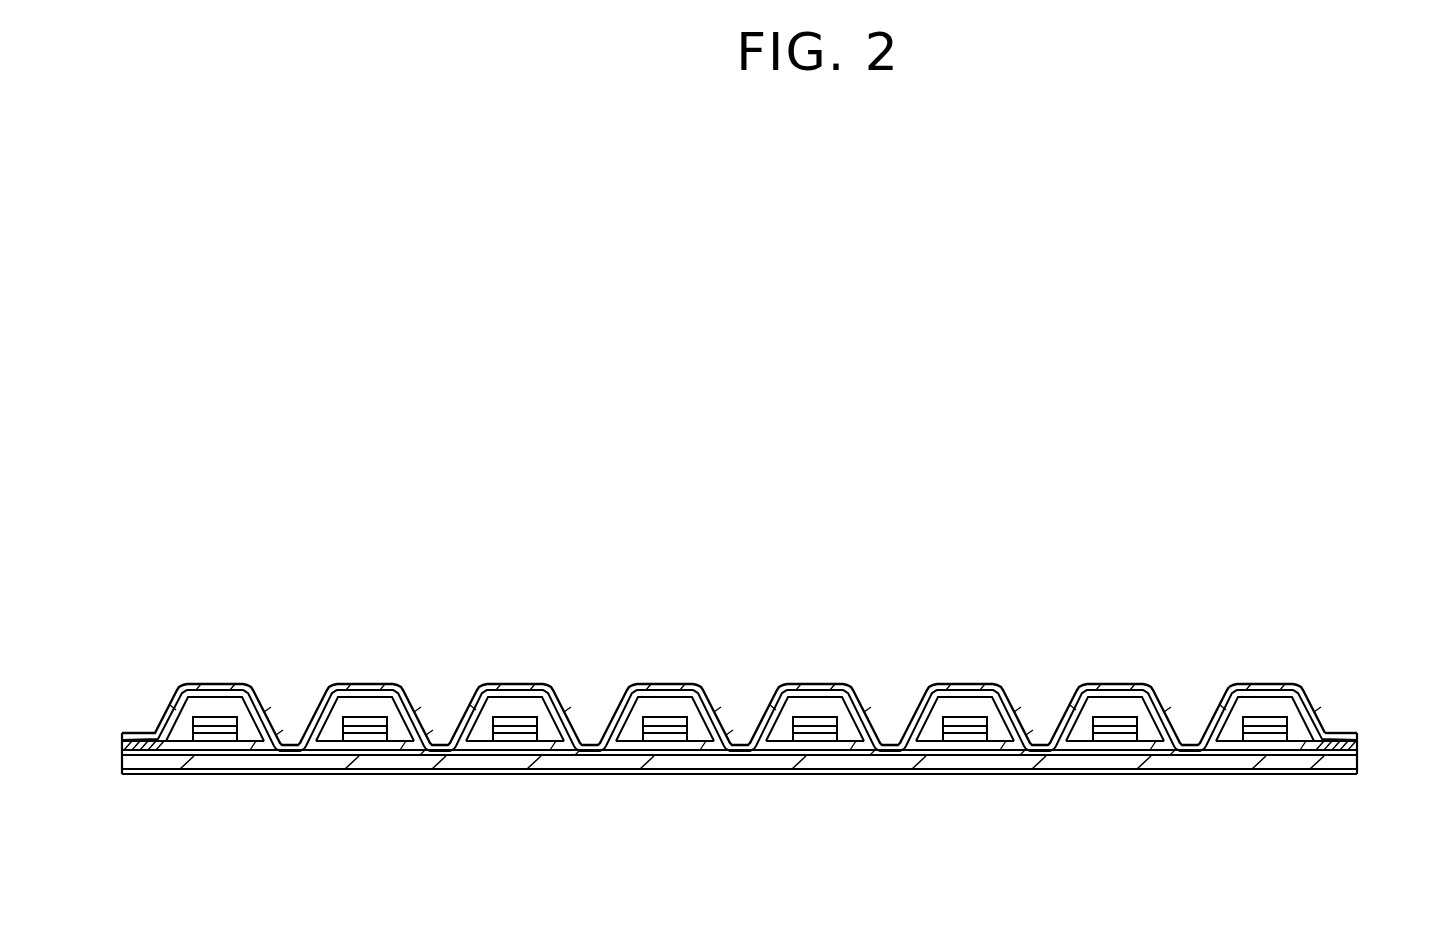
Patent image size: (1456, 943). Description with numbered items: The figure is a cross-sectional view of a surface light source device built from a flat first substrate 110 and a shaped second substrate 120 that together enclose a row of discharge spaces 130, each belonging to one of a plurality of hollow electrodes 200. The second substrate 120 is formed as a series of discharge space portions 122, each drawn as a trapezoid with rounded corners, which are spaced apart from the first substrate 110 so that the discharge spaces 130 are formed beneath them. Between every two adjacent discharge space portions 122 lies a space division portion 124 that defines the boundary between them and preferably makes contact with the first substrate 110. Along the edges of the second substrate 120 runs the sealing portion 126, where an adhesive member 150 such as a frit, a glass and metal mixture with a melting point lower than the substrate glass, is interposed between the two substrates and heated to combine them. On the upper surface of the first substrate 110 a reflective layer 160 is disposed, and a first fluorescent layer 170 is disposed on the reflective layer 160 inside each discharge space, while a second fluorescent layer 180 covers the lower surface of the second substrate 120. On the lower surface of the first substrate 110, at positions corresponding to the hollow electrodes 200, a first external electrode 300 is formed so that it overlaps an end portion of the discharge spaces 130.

The first substrate 110 is at (1362, 768).
The second substrate 120 is at (785, 678).
The discharge space portion 122 is at (1262, 690).
The space division portion 124 is at (1188, 743).
The sealing portion 126 is at (1337, 732).
The discharge space 130 is at (1103, 707).
The adhesive member 150 is at (1360, 745).
The reflective layer 160 is at (1157, 756).
The first fluorescent layer 170 is at (1085, 743).
The second fluorescent layer 180 is at (962, 700).
The hollow electrode 200 is at (1263, 742).
The first external electrode 300 is at (1280, 768).